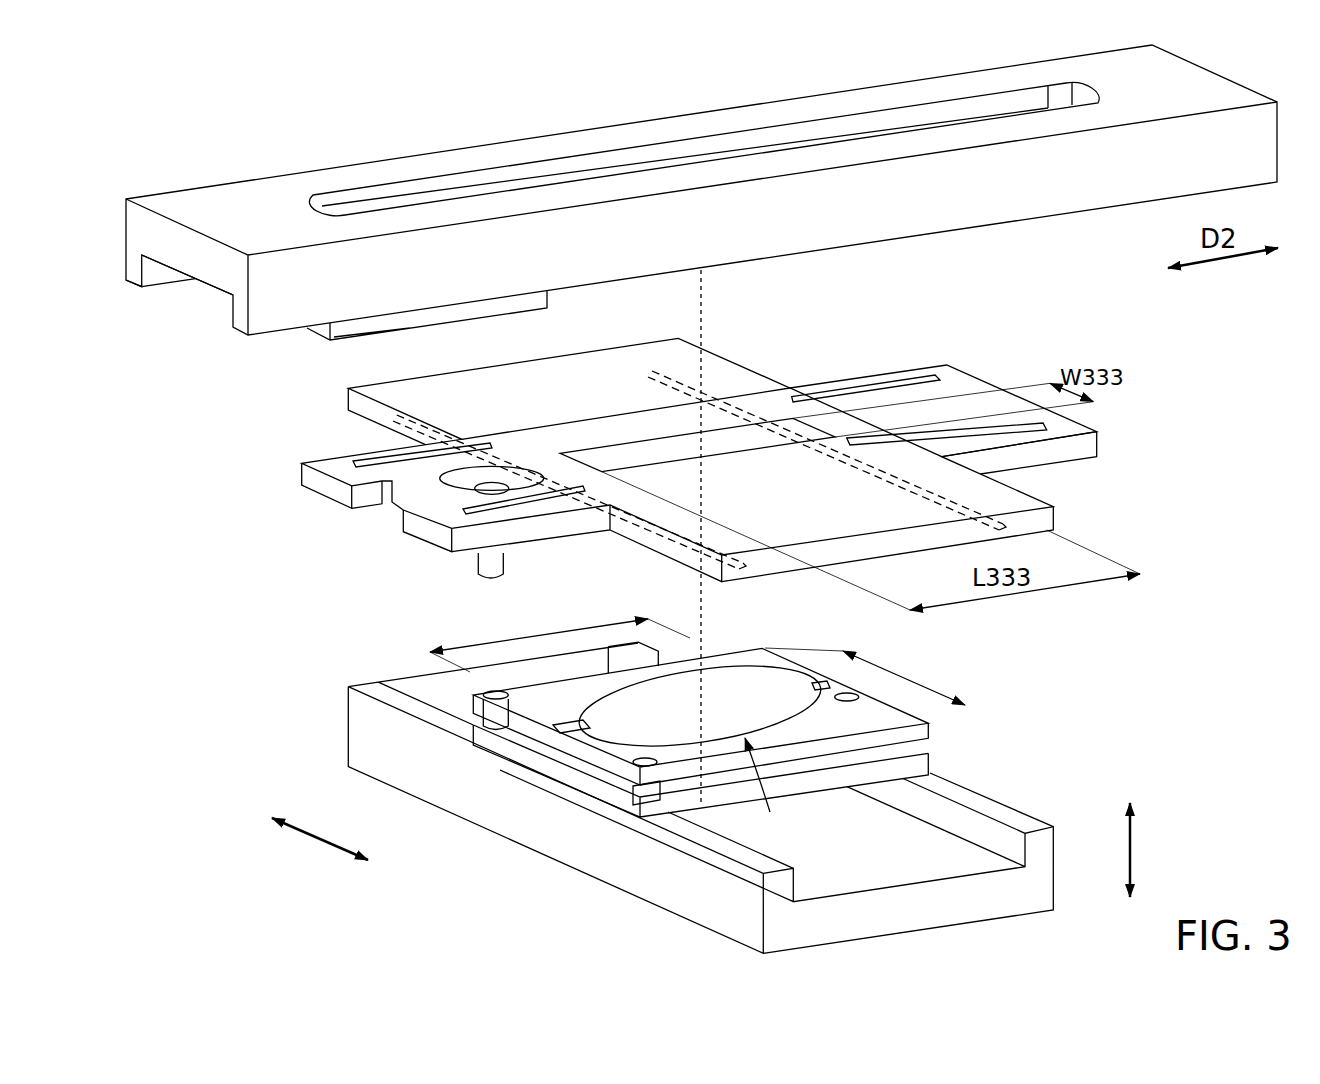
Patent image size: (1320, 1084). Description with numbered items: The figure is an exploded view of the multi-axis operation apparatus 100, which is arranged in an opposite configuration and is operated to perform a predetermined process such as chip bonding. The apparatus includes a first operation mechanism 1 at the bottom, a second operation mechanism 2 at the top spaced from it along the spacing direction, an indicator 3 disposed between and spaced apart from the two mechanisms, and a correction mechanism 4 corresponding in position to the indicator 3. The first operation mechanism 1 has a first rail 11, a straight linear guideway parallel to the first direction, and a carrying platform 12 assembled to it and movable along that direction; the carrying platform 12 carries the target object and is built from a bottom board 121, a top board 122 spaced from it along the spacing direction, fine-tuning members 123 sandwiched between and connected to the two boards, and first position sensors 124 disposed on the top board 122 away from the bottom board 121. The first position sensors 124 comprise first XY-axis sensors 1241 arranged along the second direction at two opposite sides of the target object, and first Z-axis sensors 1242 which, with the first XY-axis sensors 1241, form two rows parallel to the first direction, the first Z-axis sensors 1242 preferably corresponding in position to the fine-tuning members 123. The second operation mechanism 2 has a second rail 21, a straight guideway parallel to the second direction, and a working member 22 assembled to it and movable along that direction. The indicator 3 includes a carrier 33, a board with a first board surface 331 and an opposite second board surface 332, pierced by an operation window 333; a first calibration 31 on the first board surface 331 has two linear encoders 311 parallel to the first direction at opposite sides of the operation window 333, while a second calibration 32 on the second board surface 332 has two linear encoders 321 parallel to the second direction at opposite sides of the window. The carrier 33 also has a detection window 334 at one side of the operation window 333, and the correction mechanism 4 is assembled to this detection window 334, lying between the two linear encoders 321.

The multi-axis operation apparatus 100 is at (205, 148).
The first operation mechanism 1 is at (272, 640).
The first rail 11 is at (352, 709).
The carrying platform 12 is at (470, 689).
The bottom board 121 is at (915, 768).
The top board 122 is at (922, 737).
The fine-tuning member 123 is at (650, 805).
The first position sensor 124 is at (600, 912).
The first XY-axis sensor 1241 is at (570, 733).
The first Z-axis sensor 1242 is at (490, 728).
The second operation mechanism 2 is at (326, 408).
The second rail 21 is at (240, 336).
The working member 22 is at (320, 336).
The indicator 3 is at (828, 325).
The first calibration 31 is at (715, 393).
The linear encoder 311 is at (668, 376).
The second calibration 32 is at (773, 398).
The linear encoder 321 is at (895, 373).
The carrier 33 is at (832, 383).
The first board surface 331 is at (1070, 470).
The second board surface 332 is at (955, 385).
The operation window 333 is at (614, 447).
The detection window 334 is at (480, 490).
The correction mechanism 4 is at (478, 569).